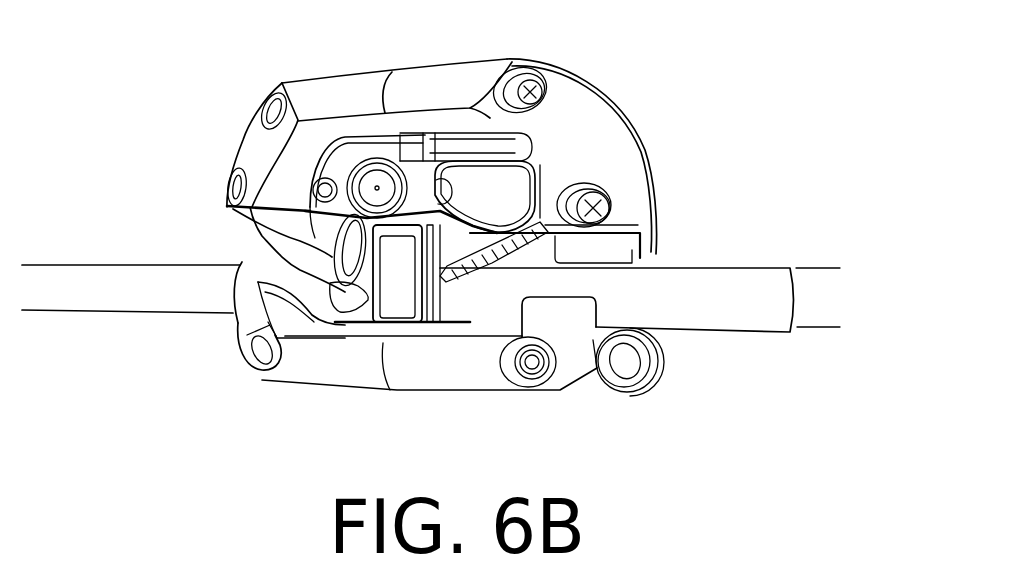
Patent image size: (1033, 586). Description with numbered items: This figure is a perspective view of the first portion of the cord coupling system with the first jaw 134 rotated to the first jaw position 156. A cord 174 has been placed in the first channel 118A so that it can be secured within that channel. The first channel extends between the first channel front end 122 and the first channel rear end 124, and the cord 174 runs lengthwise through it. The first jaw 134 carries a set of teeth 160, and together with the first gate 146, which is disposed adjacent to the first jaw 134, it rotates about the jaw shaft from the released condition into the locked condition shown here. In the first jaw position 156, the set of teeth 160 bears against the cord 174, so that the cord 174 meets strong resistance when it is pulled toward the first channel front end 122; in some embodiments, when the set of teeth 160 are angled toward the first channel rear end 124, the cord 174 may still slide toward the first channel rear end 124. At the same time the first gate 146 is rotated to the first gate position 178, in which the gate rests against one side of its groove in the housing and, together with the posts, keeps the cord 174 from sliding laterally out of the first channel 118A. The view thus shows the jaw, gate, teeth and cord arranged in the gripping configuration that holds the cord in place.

The first gate position 178 is at (212, 58).
The first jaw position 156 is at (203, 94).
The first channel front end 122 is at (206, 196).
The first gate 146 is at (368, 297).
The first channel 118A is at (342, 322).
The set of teeth 160 is at (483, 255).
The first jaw 134 is at (489, 237).
The first channel rear end 124 is at (656, 238).
The cord 174 is at (695, 302).